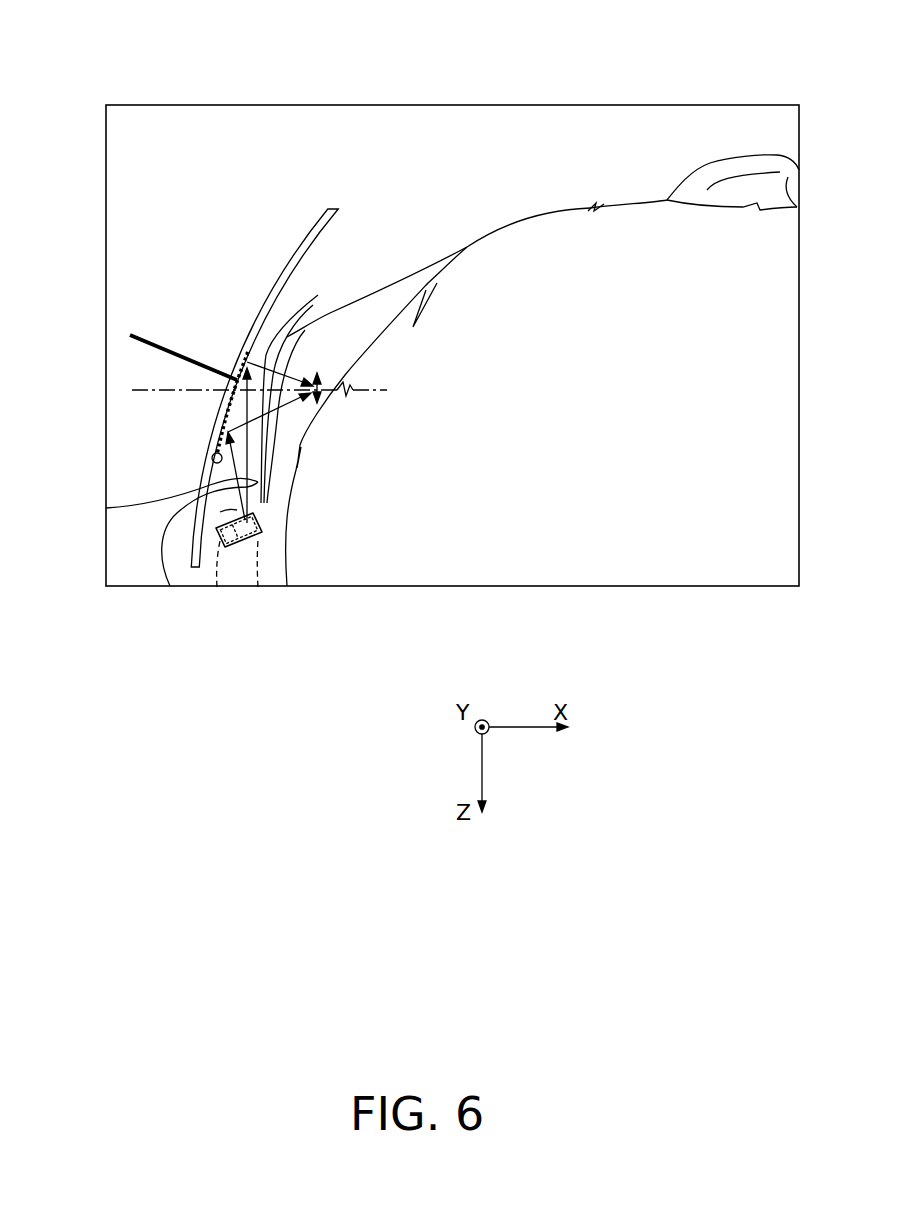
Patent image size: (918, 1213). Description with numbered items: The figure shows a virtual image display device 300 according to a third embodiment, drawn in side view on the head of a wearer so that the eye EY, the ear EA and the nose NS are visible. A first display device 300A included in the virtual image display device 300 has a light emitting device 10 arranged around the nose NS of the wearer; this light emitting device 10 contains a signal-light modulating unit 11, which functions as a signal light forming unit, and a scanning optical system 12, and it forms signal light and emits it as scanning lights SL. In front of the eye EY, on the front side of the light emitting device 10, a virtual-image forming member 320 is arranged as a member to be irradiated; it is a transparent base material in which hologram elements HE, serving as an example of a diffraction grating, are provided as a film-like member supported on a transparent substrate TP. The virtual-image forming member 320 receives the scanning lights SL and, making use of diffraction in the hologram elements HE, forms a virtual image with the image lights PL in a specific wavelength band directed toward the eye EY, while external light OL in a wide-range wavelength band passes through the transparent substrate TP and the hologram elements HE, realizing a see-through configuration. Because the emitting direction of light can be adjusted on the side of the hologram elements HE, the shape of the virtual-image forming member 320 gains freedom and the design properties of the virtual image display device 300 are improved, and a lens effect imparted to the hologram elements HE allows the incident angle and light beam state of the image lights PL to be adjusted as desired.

The virtual image display device 300 is at (302, 78).
The first display device 300A is at (264, 178).
The virtual-image forming member 320 is at (233, 313).
The eye EY is at (318, 420).
The ear EA is at (763, 178).
The image lights PL is at (318, 296).
The transparent substrate TP is at (228, 360).
The external light OL is at (130, 335).
The optical axis OA is at (177, 388).
The hologram elements HE is at (207, 460).
The scanning lights SL is at (215, 467).
The nose NS is at (183, 575).
The light emitting device 10 is at (245, 561).
The signal-light modulating unit 11 is at (217, 587).
The scanning optical system 12 is at (258, 587).